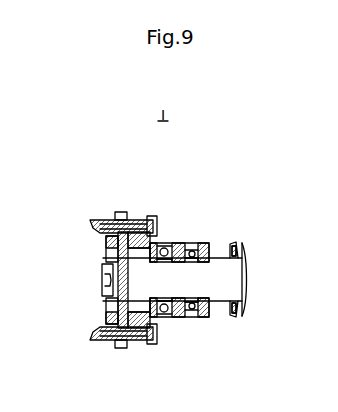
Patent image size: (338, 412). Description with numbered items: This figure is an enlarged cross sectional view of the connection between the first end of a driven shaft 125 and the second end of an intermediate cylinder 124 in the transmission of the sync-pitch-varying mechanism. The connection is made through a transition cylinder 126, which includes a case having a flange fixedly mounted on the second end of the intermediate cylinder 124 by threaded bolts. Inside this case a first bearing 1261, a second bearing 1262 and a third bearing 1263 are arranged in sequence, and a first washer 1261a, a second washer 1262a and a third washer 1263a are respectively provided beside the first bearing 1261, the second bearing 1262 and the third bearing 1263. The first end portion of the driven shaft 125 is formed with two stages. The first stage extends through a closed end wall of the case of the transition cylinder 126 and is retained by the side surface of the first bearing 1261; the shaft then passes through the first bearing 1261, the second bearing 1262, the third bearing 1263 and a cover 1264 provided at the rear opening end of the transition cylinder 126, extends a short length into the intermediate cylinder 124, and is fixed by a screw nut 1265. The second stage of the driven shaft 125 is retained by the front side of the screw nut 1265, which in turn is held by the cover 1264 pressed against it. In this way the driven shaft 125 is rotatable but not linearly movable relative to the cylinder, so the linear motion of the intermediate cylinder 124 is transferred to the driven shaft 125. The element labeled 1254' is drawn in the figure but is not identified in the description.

The intermediate cylinder 124 is at (97, 225).
The driven shaft 125 is at (237, 287).
The transition cylinder 126 is at (185, 242).
The first bearing 1261 is at (205, 244).
The first washer 1261a is at (177, 308).
The second bearing 1262 is at (167, 247).
The second washer 1262a is at (150, 317).
The third bearing 1263 is at (157, 247).
The third washer 1263a is at (103, 293).
The cover 1264 is at (102, 312).
The screw nut 1265 is at (105, 258).
The sealing member 1254' is at (236, 305).